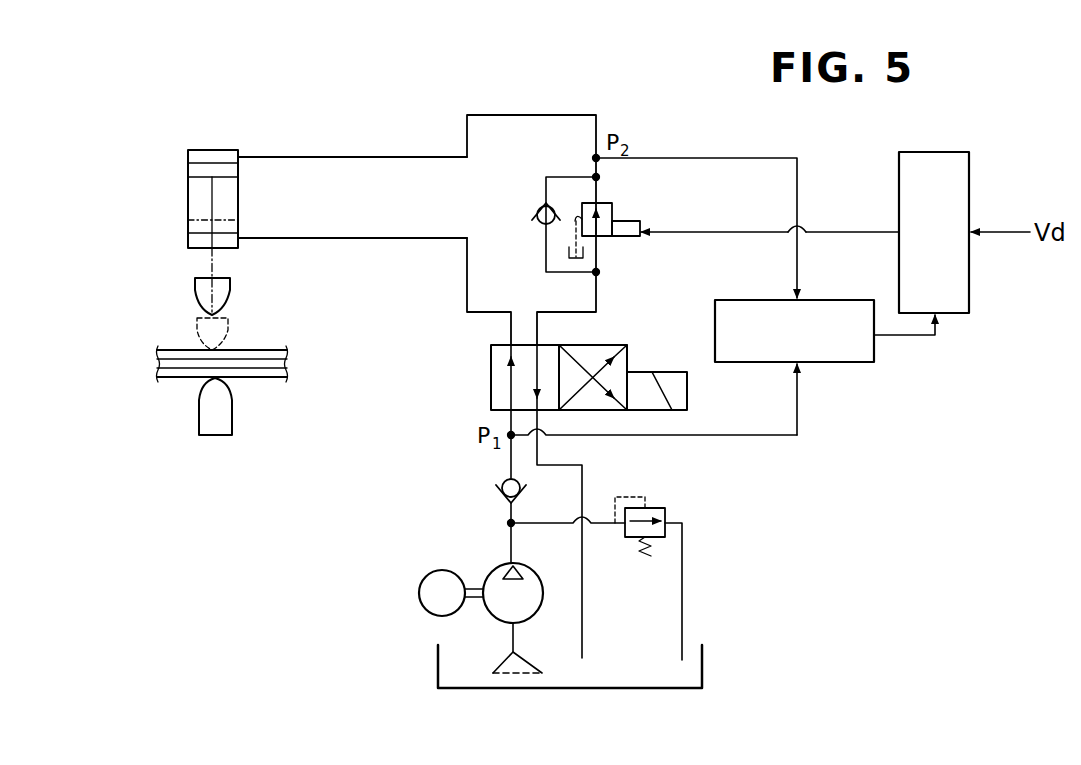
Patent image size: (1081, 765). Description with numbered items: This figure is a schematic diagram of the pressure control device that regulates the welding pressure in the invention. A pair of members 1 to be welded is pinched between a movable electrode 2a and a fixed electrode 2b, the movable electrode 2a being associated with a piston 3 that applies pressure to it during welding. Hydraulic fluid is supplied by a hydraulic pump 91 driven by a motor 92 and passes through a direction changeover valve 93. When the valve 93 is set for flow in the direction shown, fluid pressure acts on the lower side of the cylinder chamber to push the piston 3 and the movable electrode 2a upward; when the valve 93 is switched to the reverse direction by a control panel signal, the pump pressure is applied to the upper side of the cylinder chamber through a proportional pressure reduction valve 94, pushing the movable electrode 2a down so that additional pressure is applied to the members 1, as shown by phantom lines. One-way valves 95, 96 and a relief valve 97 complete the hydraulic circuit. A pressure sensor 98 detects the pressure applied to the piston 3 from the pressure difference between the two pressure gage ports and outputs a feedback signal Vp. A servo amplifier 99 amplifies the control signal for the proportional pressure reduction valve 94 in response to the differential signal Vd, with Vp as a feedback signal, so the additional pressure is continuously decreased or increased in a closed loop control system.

The members to be welded 1 is at (270, 352).
The movable electrode 2a is at (232, 284).
The fixed electrode 2b is at (234, 400).
The piston 3 is at (188, 190).
The hydraulic pump 91 is at (560, 558).
The motor 92 is at (446, 570).
The direction changeover valve 93 is at (491, 384).
The proportional pressure reduction valve 94 is at (612, 210).
The one-way valve 95 is at (536, 208).
The one-way valve 96 is at (500, 497).
The relief valve 97 is at (655, 508).
The pressure sensor 98 is at (715, 325).
The servo amplifier 99 is at (936, 152).